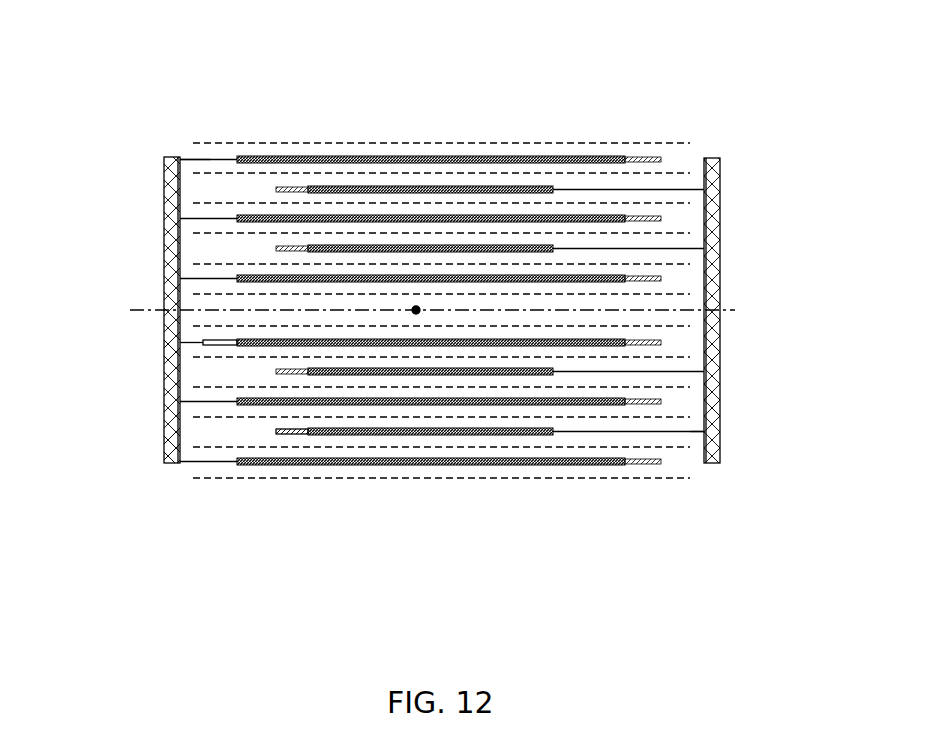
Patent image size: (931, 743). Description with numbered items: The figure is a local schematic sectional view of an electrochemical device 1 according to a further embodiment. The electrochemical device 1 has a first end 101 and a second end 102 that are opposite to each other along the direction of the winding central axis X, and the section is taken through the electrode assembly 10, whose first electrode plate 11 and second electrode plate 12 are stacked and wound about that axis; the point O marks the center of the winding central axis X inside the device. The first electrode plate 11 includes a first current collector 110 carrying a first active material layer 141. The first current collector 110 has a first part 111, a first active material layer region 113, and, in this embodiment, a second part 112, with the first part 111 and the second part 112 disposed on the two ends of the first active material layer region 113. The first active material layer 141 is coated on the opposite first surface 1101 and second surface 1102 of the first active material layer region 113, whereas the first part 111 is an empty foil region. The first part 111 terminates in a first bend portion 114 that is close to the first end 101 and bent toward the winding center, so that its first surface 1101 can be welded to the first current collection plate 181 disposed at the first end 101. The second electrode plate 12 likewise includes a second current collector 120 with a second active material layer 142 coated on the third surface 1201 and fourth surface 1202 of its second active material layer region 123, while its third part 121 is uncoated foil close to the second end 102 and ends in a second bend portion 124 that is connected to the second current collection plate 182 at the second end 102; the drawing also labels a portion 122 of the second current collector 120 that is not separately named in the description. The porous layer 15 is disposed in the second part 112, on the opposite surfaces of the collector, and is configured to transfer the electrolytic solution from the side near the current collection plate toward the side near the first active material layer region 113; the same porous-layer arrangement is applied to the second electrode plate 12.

The electrochemical device 1 is at (145, 120).
The electrode assembly 10 is at (198, 478).
The first electrode plate 11 is at (275, 571).
The first current collector 110 is at (690, 528).
The first part 111 is at (637, 434).
The second part 112 is at (295, 437).
The first active material layer region 113 is at (522, 436).
The first bend portion 114 is at (699, 400).
The first active material layer 141 is at (305, 426).
The second electrode plate 12 is at (550, 49).
The second current collector 120 is at (370, 90).
The third part 121 is at (222, 157).
The second electrode end portion 122 is at (650, 157).
The second active material layer region 123 is at (350, 156).
The second bend portion 124 is at (207, 157).
The second active material layer 142 is at (662, 163).
The porous layer 15 is at (641, 370).
The first end 101 is at (729, 426).
The first surface 1101 is at (708, 388).
The second surface 1102 is at (722, 407).
The first current collection plate 181 is at (722, 352).
The second end 102 is at (151, 414).
The third surface 1201 is at (169, 441).
The fourth surface 1202 is at (189, 446).
The second current collection plate 182 is at (172, 349).
The center point O is at (416, 310).
The winding central axis X is at (422, 311).